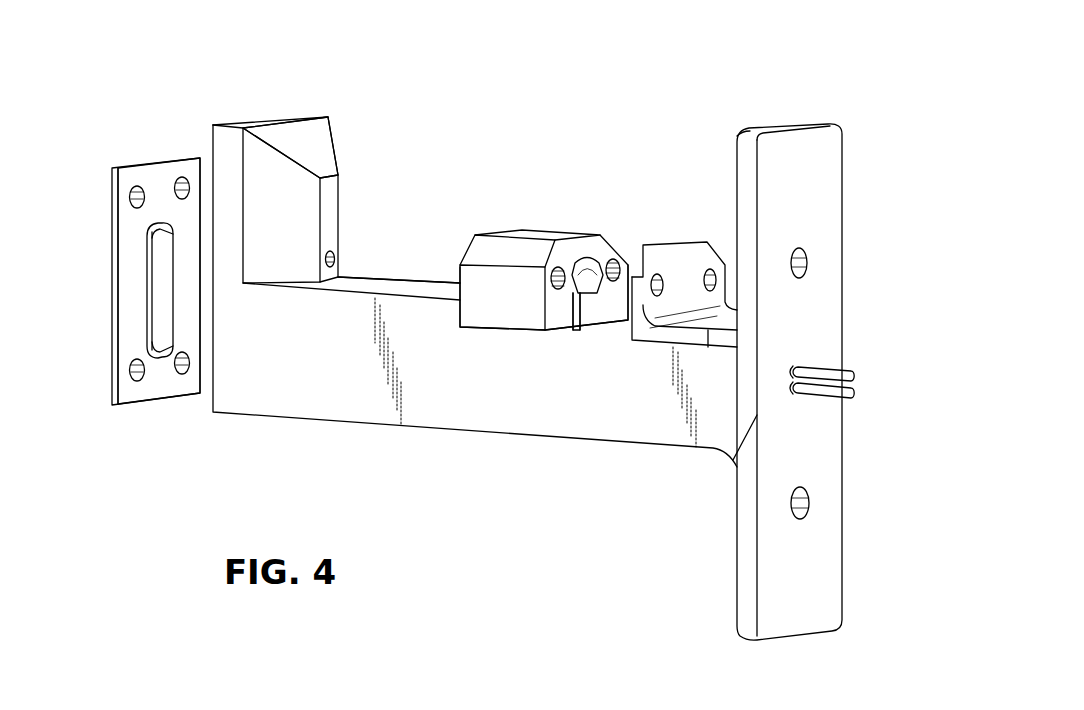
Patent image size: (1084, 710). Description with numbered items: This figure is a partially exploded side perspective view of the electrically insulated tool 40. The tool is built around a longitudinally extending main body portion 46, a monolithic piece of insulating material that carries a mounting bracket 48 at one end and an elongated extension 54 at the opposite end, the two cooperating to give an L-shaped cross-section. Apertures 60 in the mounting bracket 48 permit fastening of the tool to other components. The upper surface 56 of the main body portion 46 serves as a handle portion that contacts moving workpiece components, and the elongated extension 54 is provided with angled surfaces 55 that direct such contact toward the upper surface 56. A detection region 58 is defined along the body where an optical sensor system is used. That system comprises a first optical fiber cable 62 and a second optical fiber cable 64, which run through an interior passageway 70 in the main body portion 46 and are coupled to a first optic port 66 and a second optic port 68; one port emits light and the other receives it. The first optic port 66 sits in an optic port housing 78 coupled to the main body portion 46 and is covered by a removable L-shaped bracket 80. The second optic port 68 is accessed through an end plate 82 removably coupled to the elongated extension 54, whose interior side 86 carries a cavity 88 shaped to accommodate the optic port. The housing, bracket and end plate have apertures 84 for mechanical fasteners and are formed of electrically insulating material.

The electrically insulated tool 40 is at (888, 152).
The main body portion 46 is at (347, 405).
The mounting bracket 48 is at (828, 215).
The elongated extension 54 is at (274, 119).
The angled surfaces 55 is at (298, 185).
The upper surface 56 is at (400, 297).
The detection region 58 is at (413, 190).
The apertures 60 is at (808, 258).
The first optical fiber cable 62 is at (577, 312).
The second optical fiber cable 64 is at (825, 402).
The first optic port 66 is at (583, 258).
The second optic port 68 is at (335, 258).
The interior passageway 70 is at (793, 390).
The optic port housing 78 is at (528, 230).
The L-shaped bracket 80 is at (657, 243).
The end plate 82 is at (112, 218).
The apertures 84 is at (180, 187).
The interior side 86 is at (128, 238).
The cavity 88 is at (148, 272).